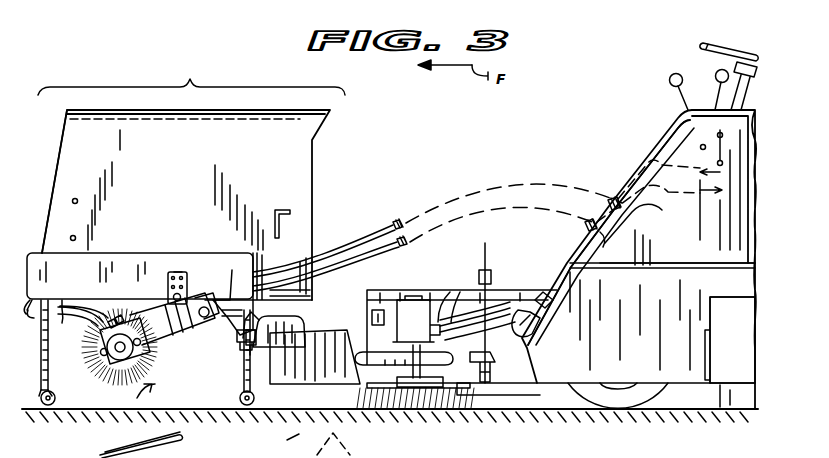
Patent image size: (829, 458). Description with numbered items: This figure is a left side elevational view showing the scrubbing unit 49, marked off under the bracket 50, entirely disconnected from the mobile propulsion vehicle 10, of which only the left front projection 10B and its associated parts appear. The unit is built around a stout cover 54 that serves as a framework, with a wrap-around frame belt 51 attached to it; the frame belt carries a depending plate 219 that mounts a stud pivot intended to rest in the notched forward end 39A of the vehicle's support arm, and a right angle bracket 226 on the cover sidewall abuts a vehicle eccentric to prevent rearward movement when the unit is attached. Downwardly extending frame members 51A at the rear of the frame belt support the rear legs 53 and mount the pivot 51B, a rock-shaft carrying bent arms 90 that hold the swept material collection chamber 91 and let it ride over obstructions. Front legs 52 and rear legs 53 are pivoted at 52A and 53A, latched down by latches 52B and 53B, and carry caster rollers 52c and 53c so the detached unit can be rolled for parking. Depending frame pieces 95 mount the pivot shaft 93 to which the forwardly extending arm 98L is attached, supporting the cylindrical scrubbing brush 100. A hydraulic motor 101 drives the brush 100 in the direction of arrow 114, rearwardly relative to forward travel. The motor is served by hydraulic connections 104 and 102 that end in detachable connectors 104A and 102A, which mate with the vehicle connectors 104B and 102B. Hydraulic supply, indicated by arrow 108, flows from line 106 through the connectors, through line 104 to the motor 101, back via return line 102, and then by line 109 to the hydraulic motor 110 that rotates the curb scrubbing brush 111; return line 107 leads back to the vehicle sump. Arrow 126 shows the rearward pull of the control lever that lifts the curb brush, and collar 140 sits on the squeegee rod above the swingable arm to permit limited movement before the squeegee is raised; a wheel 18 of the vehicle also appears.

The mobile propulsion vehicle 10 is at (691, 92).
The forwardly and downwardly inclined projection 10B is at (683, 332).
The rear wheel 18 is at (629, 402).
The notched forward end of support arm 39A is at (533, 310).
The scrubbing unit 49 is at (298, 162).
The bracket indicating scrubbing unit extent 50 is at (191, 75).
The frame belt 51 is at (55, 258).
The downwardly extending frame member 51A is at (254, 270).
The pivot 51B is at (268, 302).
The front leg 52 is at (67, 371).
The leg pivot 52A is at (62, 315).
The leg latch 52B is at (140, 276).
The caster roller 52c is at (55, 396).
The rear leg 53 is at (243, 373).
The leg pivot 53A is at (238, 349).
The leg latch 53B is at (238, 358).
The caster roller 53c is at (253, 391).
The cover 54 is at (84, 154).
The bent arm 90 is at (307, 322).
The swept material collection chamber 91 is at (352, 308).
The pivot shaft 93 is at (237, 312).
The depending frame piece 95 is at (207, 290).
The left forwardly extending arm 98L is at (164, 269).
The cylindrical scrubbing brush 100 is at (116, 397).
The hydraulic motor 101 is at (127, 335).
The hydraulic connection 102 is at (100, 307).
The detachable hydraulic connector 102A is at (414, 241).
The hydraulic connection on vehicle 102B is at (584, 225).
The hydraulic connection 104 is at (67, 303).
The detachable hydraulic connector 104A is at (408, 223).
The hydraulic connection on vehicle 104B is at (616, 197).
The hydraulic supply line 106 is at (673, 142).
The hydraulic return line 107 is at (686, 206).
The hydraulic supply arrow 108 is at (708, 152).
The hydraulic line 109 is at (613, 248).
The hydraulic motor 110 is at (420, 314).
The curb scrubbing brush 111 is at (427, 393).
The brush rotation arrow 114 is at (166, 395).
The control lever movement arrow 126 is at (174, 450).
The collar 140 is at (494, 262).
The depending plate 219 is at (180, 272).
The right angle bracket 226 is at (292, 223).